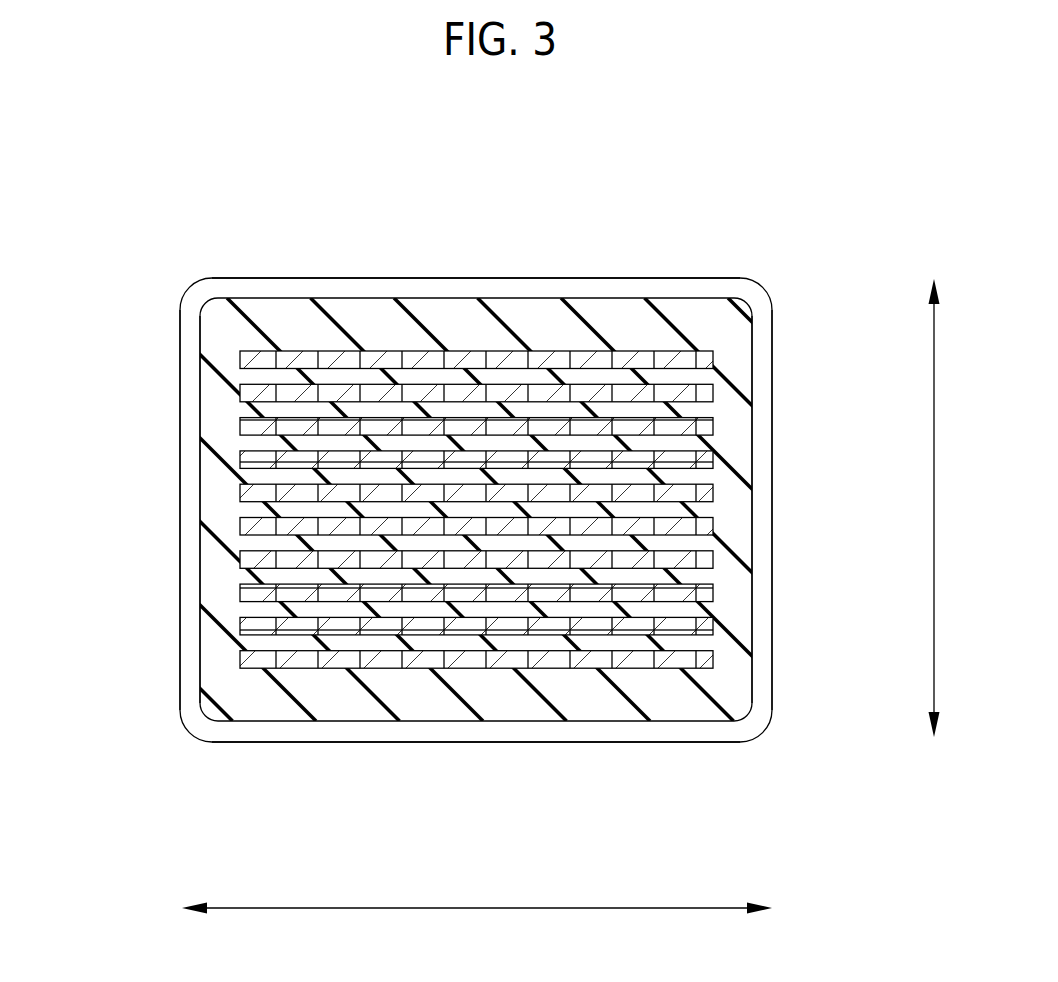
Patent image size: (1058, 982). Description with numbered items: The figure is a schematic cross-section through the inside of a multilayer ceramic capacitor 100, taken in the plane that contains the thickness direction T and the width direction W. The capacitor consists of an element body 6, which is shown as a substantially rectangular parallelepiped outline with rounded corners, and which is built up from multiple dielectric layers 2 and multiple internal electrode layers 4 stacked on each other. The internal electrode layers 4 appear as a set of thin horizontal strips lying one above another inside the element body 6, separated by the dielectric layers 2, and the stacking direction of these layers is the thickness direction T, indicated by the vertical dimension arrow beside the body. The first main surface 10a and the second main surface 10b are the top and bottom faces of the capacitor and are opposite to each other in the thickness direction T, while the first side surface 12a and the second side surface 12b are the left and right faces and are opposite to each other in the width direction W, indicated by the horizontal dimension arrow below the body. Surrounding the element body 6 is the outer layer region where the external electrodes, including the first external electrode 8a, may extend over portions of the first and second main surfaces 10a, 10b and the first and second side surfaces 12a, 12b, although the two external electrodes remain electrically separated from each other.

The multilayer ceramic capacitor 100 is at (758, 223).
The dielectric layers 2 is at (450, 298).
The internal electrode layers 4 is at (530, 357).
The element body 6 is at (650, 271).
The first external electrode 8a is at (193, 608).
The first main surface 10a is at (274, 244).
The second main surface 10b is at (271, 777).
The first side surface 12a is at (157, 390).
The second side surface 12b is at (797, 388).
The thickness direction T is at (946, 508).
The width direction W is at (477, 923).